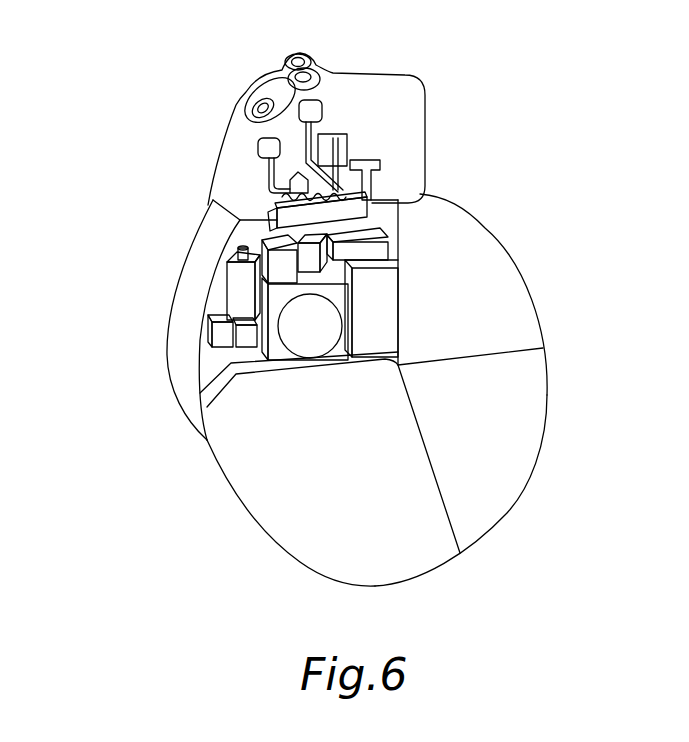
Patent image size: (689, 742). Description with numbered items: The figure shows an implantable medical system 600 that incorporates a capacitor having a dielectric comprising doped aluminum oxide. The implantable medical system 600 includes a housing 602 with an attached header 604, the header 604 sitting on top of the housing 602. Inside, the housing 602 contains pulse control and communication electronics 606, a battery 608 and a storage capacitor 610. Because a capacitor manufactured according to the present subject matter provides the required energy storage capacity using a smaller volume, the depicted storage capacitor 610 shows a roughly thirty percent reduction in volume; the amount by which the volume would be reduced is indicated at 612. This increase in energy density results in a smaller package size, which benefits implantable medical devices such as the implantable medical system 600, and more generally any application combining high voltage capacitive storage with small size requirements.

The implantable medical system 600 is at (113, 68).
The housing 602 is at (165, 350).
The header 604 is at (366, 88).
The pulse control and communication electronics 606 is at (243, 292).
The battery 608 is at (290, 527).
The storage capacitor 610 is at (520, 414).
The volume reduction 612 is at (503, 283).